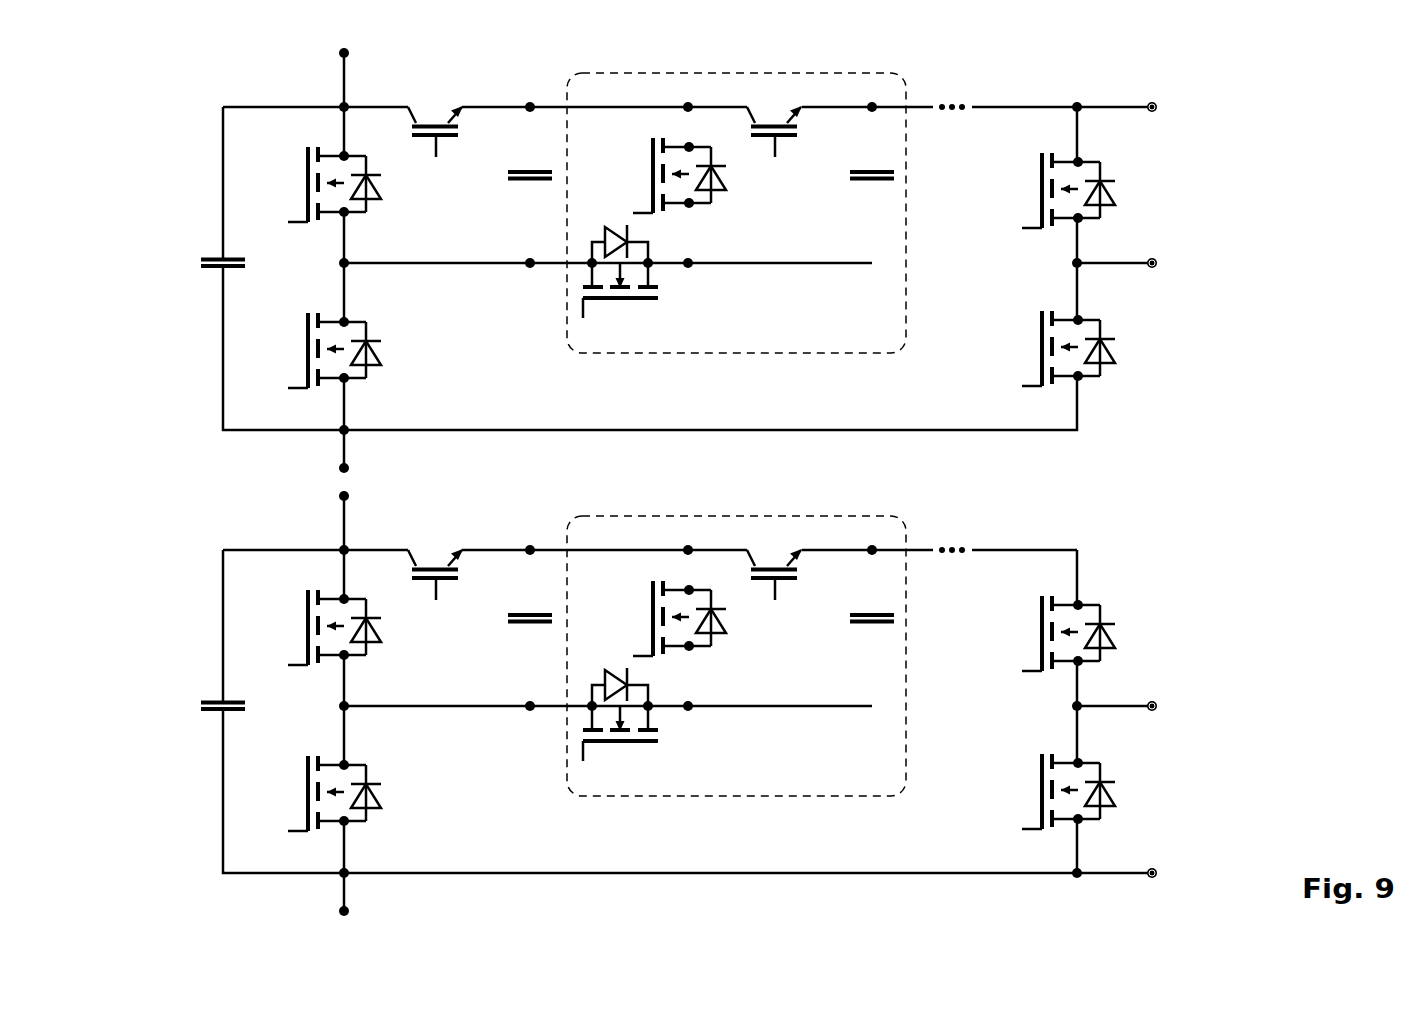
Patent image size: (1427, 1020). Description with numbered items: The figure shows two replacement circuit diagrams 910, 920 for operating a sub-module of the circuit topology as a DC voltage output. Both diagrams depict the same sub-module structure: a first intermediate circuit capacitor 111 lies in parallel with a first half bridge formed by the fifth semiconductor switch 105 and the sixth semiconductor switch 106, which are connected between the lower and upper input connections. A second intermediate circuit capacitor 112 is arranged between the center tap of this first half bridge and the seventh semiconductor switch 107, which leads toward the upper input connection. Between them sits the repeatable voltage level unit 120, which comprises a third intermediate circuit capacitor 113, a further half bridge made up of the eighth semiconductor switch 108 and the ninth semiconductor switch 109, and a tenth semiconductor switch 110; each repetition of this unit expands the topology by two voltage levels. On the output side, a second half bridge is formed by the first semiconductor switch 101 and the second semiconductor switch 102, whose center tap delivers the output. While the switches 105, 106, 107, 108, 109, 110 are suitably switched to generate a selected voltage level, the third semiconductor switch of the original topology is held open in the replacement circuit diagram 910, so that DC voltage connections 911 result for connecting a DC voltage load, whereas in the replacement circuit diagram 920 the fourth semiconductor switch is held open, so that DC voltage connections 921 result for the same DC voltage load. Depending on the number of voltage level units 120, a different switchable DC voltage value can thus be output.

The first semiconductor switch 101 is at (1037, 178).
The second semiconductor switch 102 is at (1037, 338).
The fifth semiconductor switch 105 is at (303, 155).
The sixth semiconductor switch 106 is at (368, 370).
The seventh semiconductor switch 107 is at (447, 137).
The eighth semiconductor switch 108 is at (650, 275).
The ninth semiconductor switch 109 is at (650, 150).
The tenth semiconductor switch 110 is at (785, 137).
The first intermediate circuit capacitor 111 is at (213, 272).
The second intermediate circuit capacitor 112 is at (517, 178).
The third intermediate circuit capacitor 113 is at (863, 180).
The repeatable voltage level unit 120 is at (817, 73).
The replacement circuit diagram with first variant for DC output 910 is at (180, 209).
The DC voltage connections 911 is at (1157, 103).
The replacement circuit diagram with second variant for DC output 920 is at (180, 662).
The DC voltage connections 921 is at (1157, 702).